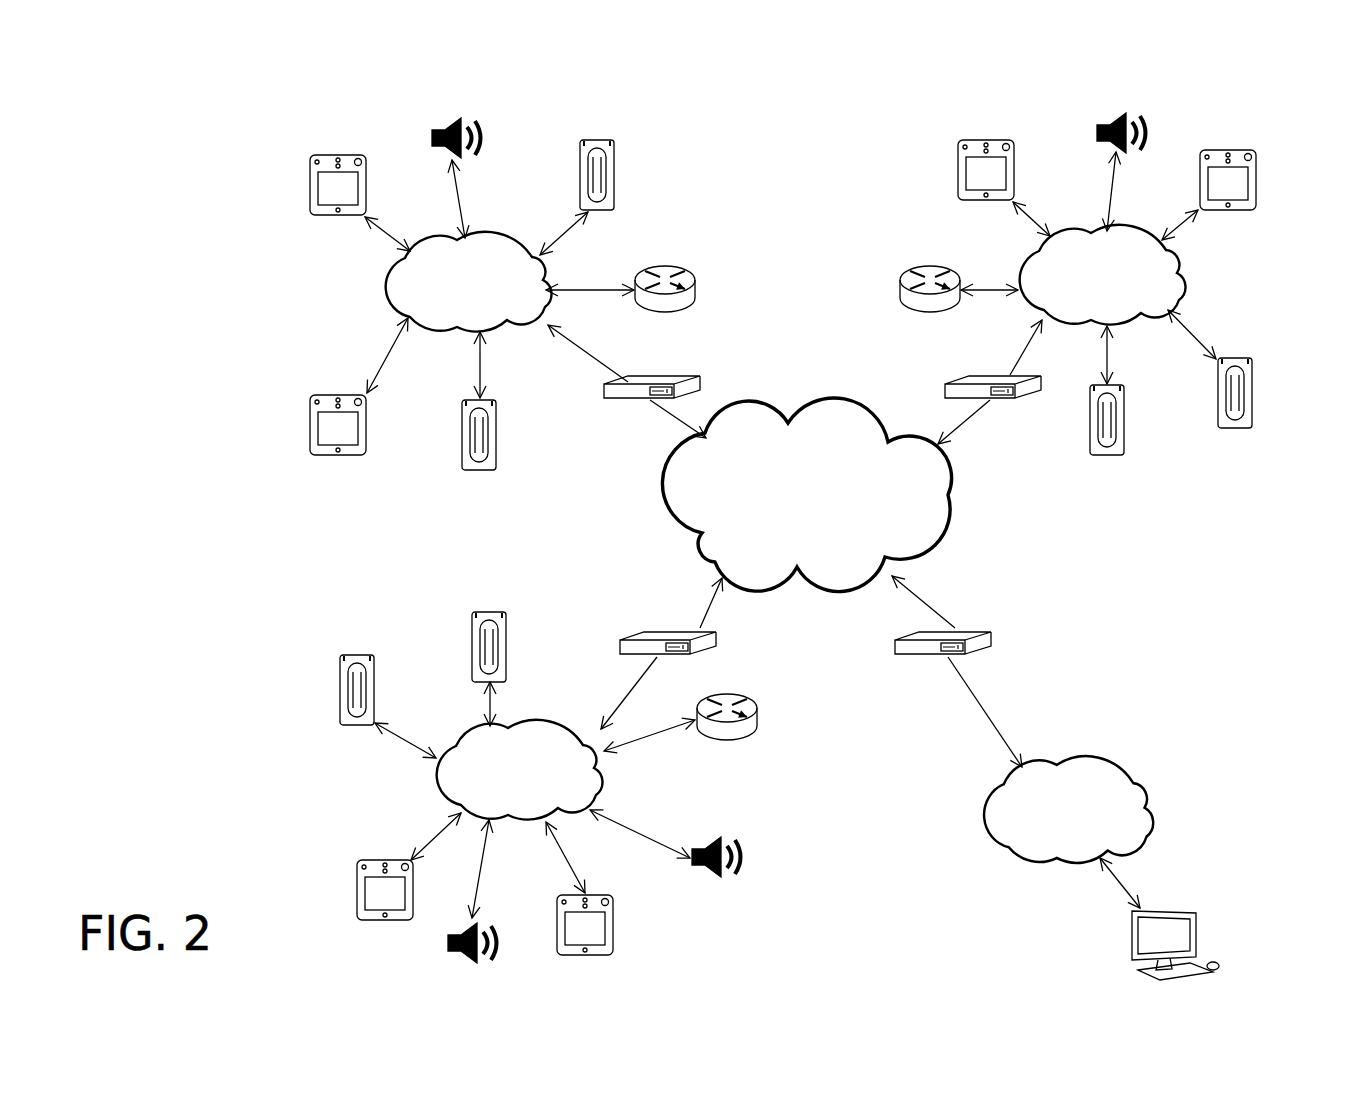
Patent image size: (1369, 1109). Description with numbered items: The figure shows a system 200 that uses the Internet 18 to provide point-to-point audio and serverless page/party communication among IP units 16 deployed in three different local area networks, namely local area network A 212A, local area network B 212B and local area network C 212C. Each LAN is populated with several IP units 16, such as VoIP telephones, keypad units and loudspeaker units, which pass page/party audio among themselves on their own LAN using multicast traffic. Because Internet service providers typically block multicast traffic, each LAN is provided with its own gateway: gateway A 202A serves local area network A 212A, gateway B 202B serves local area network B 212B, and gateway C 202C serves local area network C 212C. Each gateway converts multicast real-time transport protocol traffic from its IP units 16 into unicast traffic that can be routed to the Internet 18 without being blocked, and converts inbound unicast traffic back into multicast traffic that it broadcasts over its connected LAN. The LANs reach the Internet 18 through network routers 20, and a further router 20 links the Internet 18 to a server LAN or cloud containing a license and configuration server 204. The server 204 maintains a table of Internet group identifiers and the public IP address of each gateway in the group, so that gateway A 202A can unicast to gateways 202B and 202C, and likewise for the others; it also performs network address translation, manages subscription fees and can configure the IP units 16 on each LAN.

The IP unit 16 is at (325, 155).
The Internet 18 is at (962, 527).
The network router 20 is at (627, 400).
The system 200 is at (784, 153).
The gateway A 202A is at (662, 313).
The gateway B 202B is at (935, 313).
The gateway C 202C is at (759, 714).
The license and configuration server 204 is at (1197, 926).
The local area network A 212A is at (490, 237).
The local area network B 212B is at (1182, 283).
The local area network C 212C is at (598, 790).